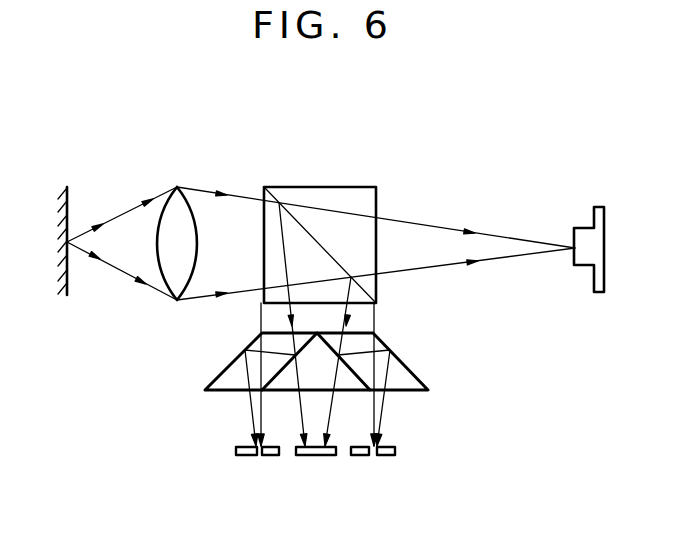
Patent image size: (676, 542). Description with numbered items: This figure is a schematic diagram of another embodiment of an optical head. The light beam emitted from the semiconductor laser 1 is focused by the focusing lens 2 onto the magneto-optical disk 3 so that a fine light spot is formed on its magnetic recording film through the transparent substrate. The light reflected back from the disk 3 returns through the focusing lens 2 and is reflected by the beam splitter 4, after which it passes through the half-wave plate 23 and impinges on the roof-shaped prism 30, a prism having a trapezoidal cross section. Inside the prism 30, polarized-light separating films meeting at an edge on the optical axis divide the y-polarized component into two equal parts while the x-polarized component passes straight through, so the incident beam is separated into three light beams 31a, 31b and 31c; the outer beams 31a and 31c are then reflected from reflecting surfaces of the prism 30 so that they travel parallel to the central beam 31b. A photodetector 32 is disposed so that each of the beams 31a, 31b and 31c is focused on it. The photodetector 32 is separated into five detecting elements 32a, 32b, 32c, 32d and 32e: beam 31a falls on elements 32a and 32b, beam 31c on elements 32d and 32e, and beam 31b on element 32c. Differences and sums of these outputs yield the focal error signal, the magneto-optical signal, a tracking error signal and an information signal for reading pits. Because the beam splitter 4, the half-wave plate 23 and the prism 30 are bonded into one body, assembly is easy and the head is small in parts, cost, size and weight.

The semiconductor laser 1 is at (598, 207).
The focusing lens 2 is at (178, 186).
The magneto-optical disk 3 is at (72, 204).
The beam splitter 4 is at (356, 224).
The half-wave plate 23 is at (372, 318).
The roof-shaped prism 30 is at (412, 371).
The light beam 31a is at (250, 404).
The light beam 31b is at (303, 418).
The light beam 31c is at (383, 420).
The photodetector 32 is at (329, 476).
The detecting element 32a is at (237, 450).
The detecting element 32b is at (273, 456).
The detecting element 32c is at (318, 456).
The detecting element 32d is at (357, 456).
The detecting element 32e is at (387, 456).